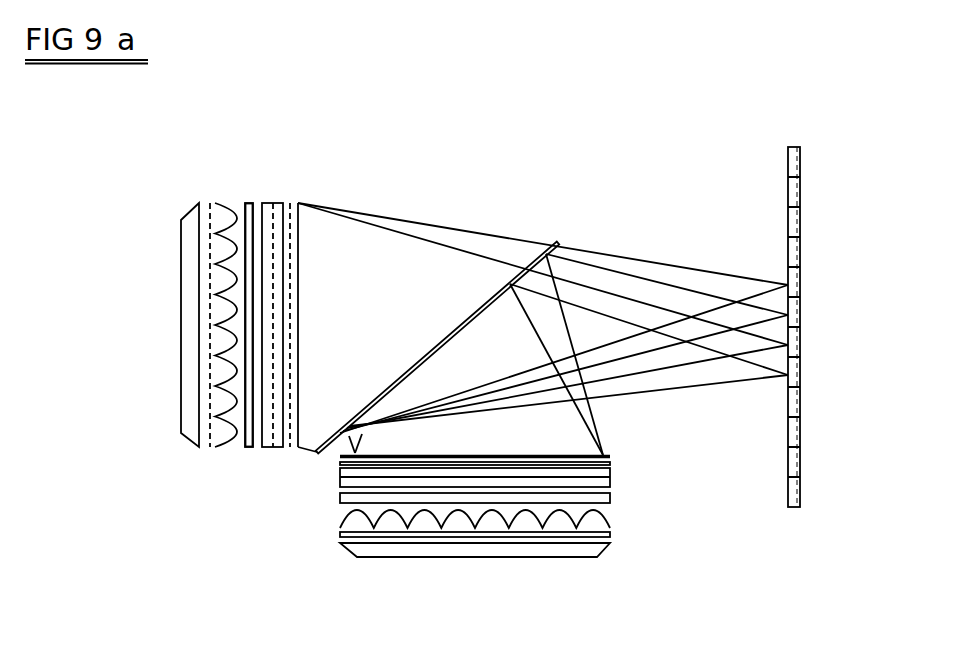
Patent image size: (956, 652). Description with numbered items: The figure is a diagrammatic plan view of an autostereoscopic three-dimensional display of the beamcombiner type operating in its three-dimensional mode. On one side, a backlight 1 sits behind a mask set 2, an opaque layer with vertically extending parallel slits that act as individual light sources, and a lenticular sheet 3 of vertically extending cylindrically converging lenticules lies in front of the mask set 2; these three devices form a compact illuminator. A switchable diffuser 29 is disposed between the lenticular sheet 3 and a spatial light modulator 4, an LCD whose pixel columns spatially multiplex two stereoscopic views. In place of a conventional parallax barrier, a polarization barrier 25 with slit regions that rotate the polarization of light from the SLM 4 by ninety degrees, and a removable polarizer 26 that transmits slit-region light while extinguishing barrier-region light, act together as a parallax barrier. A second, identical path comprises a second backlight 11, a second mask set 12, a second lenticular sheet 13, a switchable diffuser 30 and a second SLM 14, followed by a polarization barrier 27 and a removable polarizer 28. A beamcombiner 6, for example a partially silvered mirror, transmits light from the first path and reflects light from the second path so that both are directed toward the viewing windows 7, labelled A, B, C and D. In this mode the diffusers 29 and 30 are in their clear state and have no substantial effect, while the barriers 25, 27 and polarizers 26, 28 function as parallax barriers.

The backlight 1 is at (187, 217).
The mask set 2 is at (211, 208).
The lenticular sheet 3 is at (223, 207).
The switchable diffuser 29 is at (251, 448).
The spatial light modulator 4 is at (277, 448).
The polarization barrier 25 is at (290, 208).
The removable polarizer 26 is at (296, 206).
The beamcombiner 6 is at (559, 243).
The viewing windows 7 is at (821, 443).
The removable polarizer 28 is at (573, 456).
The polarization barrier 27 is at (610, 464).
The second spatial light modulator 14 is at (610, 480).
The switchable diffuser 30 is at (339, 496).
The second lenticular sheet 13 is at (610, 523).
The second mask set 12 is at (610, 535).
The second backlight 11 is at (600, 553).